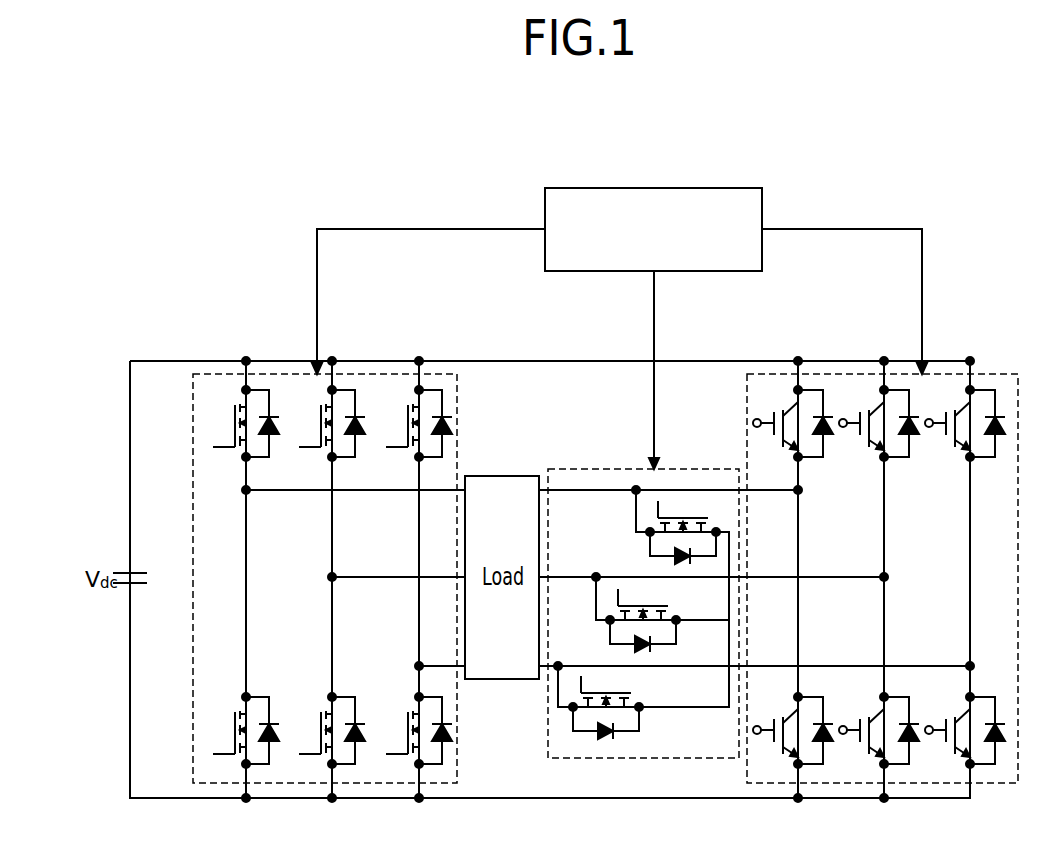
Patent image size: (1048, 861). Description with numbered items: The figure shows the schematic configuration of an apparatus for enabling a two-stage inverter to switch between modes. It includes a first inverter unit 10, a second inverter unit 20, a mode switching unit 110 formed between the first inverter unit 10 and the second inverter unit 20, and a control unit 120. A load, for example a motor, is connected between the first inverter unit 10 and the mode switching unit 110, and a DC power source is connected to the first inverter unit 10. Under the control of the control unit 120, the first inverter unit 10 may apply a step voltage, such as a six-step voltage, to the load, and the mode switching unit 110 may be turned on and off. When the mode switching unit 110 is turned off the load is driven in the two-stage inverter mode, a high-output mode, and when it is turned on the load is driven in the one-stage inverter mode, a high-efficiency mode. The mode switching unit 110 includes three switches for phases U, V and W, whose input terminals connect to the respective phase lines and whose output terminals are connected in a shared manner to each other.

The first inverter unit 10 is at (445, 374).
The second inverter unit 20 is at (1008, 374).
The mode switching unit 110 is at (692, 469).
The control unit 120 is at (762, 198).